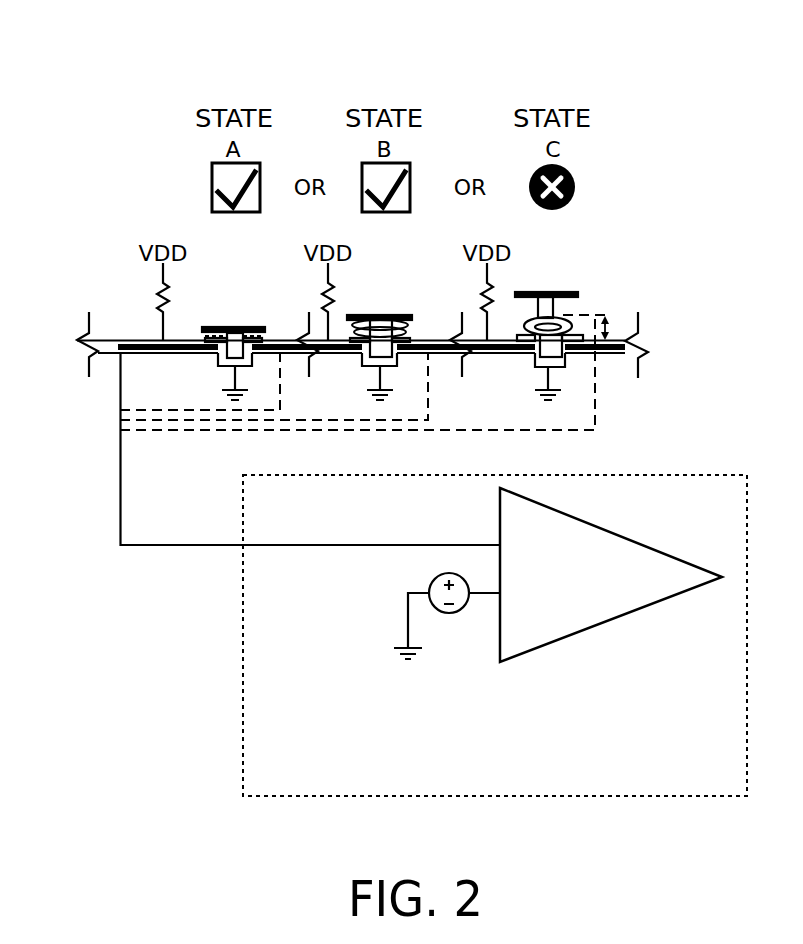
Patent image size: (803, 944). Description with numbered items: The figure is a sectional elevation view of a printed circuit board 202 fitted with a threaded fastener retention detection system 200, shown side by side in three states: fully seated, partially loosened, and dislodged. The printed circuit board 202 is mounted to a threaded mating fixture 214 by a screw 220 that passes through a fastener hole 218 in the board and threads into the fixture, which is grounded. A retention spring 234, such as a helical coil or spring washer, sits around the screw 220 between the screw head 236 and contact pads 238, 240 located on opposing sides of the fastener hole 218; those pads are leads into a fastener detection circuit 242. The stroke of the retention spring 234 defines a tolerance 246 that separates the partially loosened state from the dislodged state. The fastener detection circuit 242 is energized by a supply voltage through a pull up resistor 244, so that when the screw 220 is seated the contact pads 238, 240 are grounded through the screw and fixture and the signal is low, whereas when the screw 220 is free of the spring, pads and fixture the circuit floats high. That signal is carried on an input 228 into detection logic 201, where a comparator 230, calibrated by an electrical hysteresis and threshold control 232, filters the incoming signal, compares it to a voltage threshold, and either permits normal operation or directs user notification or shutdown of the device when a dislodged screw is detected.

The threaded fastener retention detection system 200 is at (607, 105).
The detection logic 201 is at (515, 785).
The printed circuit board 202 is at (103, 347).
The threaded mating fixture 214 is at (533, 359).
The fastener hole 218 is at (550, 347).
The screw 220 is at (596, 311).
The input 228 is at (284, 545).
The comparator 230 is at (550, 603).
The electrical hysteresis and threshold control 232 is at (450, 613).
The retention spring 234 is at (584, 317).
The screw head 236 is at (550, 291).
The contact pad 238 is at (528, 329).
The contact pad 240 is at (633, 353).
The fastener detection circuit 242 is at (104, 401).
The pull up resistor 244 is at (484, 301).
The tolerance 246 is at (625, 333).